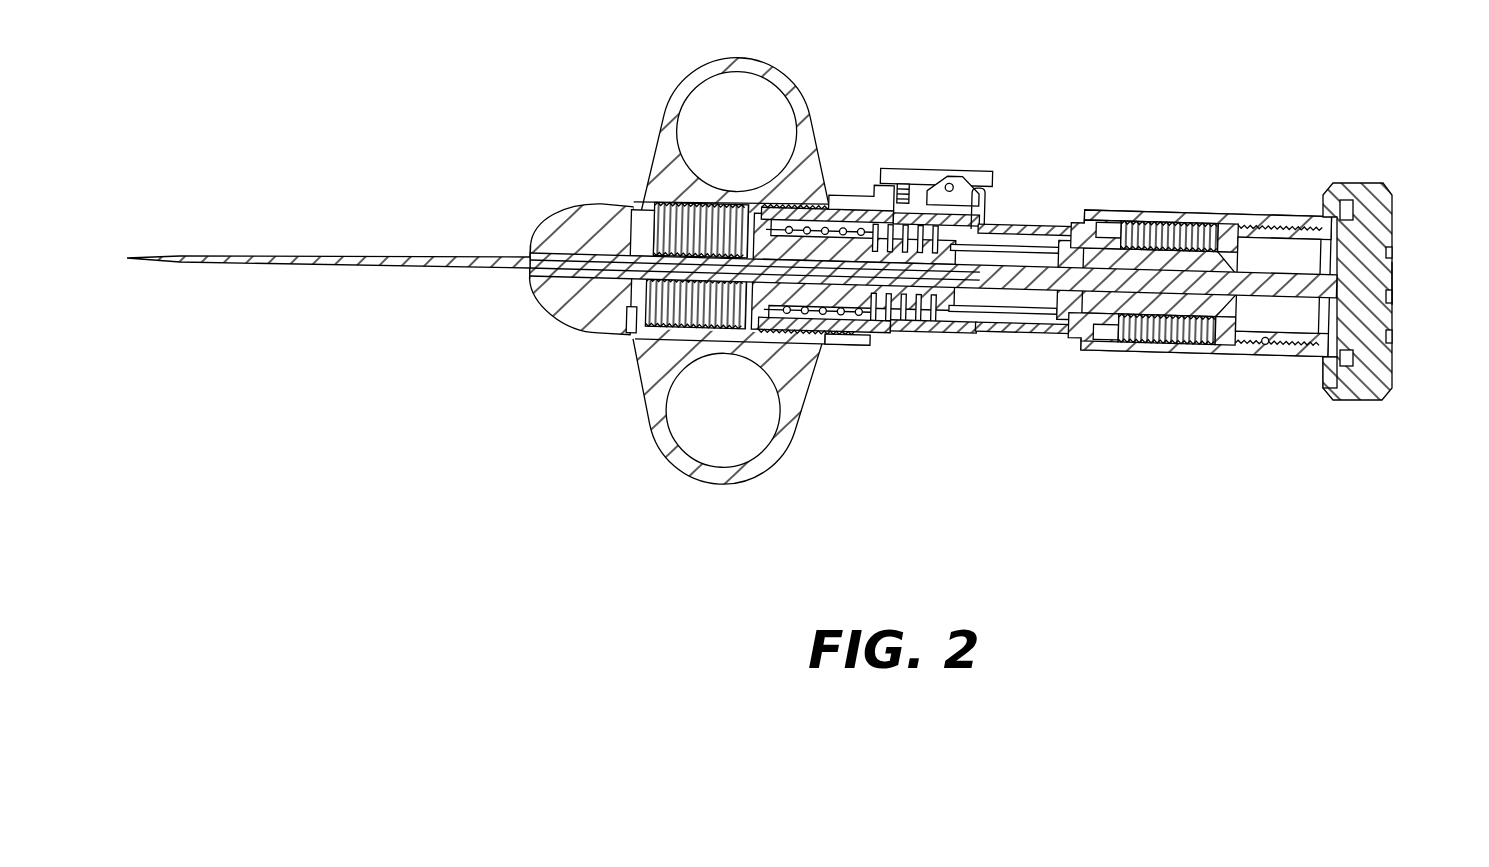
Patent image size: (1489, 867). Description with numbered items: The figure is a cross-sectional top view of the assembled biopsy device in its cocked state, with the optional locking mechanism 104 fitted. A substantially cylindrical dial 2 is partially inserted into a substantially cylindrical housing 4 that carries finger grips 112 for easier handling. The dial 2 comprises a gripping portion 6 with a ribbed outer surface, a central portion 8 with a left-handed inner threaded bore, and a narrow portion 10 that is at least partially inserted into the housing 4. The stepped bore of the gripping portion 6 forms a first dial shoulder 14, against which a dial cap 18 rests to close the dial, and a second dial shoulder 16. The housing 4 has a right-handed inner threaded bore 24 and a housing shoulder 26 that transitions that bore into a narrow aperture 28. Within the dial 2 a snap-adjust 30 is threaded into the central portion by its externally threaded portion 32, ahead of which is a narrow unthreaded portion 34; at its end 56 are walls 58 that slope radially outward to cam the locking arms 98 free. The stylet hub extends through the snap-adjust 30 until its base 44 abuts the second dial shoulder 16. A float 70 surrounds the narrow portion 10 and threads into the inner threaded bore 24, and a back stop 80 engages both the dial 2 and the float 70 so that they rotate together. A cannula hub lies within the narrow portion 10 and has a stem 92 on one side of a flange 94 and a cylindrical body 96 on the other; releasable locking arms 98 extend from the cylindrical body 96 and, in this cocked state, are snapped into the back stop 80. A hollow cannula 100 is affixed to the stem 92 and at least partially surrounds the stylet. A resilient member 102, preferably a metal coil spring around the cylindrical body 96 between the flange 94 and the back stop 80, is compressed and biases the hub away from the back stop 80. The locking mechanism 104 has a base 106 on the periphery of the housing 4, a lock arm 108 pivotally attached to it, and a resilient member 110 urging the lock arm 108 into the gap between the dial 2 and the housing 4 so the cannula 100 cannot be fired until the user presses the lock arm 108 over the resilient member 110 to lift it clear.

The dial 2 is at (1250, 184).
The housing 4 is at (588, 352).
The gripping portion 6 is at (1356, 183).
The central portion 8 is at (1288, 215).
The narrow portion 10 is at (1058, 213).
The first dial shoulder 14 is at (1377, 401).
The second dial shoulder 16 is at (1186, 216).
The dial cap 18 is at (1393, 286).
The inner threaded bore 24 is at (640, 212).
The housing shoulder 26 is at (635, 348).
The narrow aperture 28 is at (532, 290).
The snap-adjust 30 is at (1230, 356).
The externally threaded portion 32 is at (1280, 360).
The narrow unthreaded portion 34 is at (1163, 356).
The base 44 is at (1393, 250).
The end 56 is at (1040, 307).
The walls 58 is at (1086, 212).
The float 70 is at (935, 340).
The back stop 80 is at (955, 340).
The stem 92 is at (618, 240).
The flange 94 is at (815, 196).
The cylindrical body 96 is at (855, 340).
The releasable locking arms 98 is at (1002, 212).
The cannula 100 is at (403, 253).
The resilient member 102 is at (868, 203).
The locking mechanism 104 is at (961, 123).
The base 106 is at (975, 198).
The lock arm 108 is at (920, 170).
The resilient member 110 is at (898, 175).
The finger grips 112 is at (688, 475).